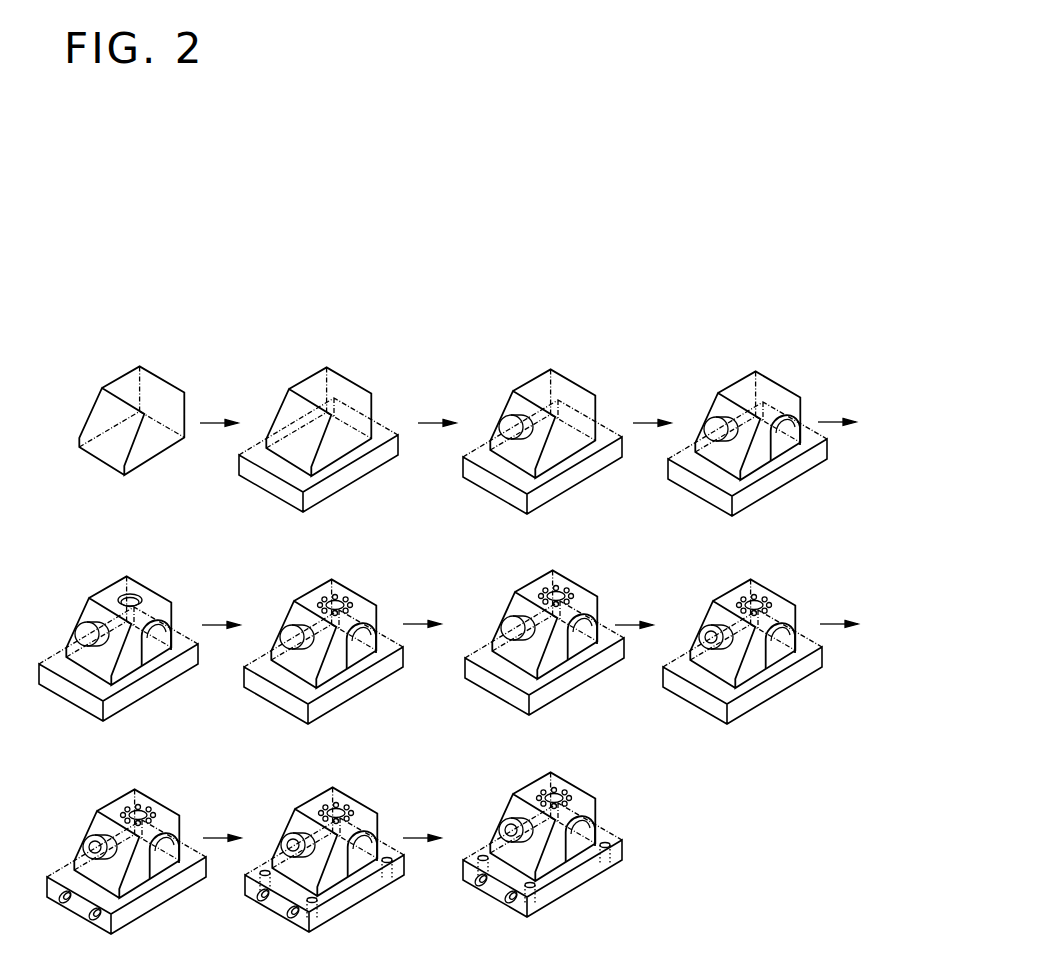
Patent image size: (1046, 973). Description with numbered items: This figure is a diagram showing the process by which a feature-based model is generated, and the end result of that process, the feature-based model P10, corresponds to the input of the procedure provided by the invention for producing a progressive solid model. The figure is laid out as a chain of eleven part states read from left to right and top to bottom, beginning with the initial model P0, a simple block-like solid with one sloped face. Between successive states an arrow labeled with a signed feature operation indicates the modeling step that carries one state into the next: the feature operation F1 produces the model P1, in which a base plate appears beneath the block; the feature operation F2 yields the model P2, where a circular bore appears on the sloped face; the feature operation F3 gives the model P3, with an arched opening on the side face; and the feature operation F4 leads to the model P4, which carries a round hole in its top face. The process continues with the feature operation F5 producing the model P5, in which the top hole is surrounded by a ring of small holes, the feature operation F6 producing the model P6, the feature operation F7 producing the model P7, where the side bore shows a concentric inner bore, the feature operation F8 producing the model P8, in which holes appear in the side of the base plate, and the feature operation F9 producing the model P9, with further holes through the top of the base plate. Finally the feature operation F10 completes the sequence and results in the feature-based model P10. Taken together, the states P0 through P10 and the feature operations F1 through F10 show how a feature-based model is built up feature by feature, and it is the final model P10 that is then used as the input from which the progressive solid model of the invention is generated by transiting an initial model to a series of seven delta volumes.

The initial workpiece (raw stock part) P0 is at (131, 399).
The part after adding base plate feature P1 is at (318, 418).
The part after adding side bore P2 is at (542, 420).
The part after adding arch slot P3 is at (747, 422).
The part after removing top hole P4 is at (118, 627).
The part after removing bolt hole pattern P5 is at (323, 630).
The intermediate part state P6 is at (544, 621).
The part after removing inner bore P7 is at (742, 630).
The part after removing base side holes P8 is at (126, 840).
The part after removing base top holes P9 is at (324, 838).
The feature-based model P10 is at (542, 826).
The additive feature operation 1 F1 is at (219, 407).
The additive feature operation 2 F2 is at (437, 407).
The additive feature operation 3 F3 is at (652, 407).
The feature operation 4 F4 is at (841, 406).
The subtractive feature operation 5 F5 is at (221, 609).
The subtractive feature operation 6 F6 is at (426, 608).
The subtractive feature operation 7 F7 is at (638, 609).
The feature operation 8 F8 is at (843, 608).
The subtractive feature operation 9 F9 is at (222, 822).
The subtractive feature operation 10 F10 is at (432, 822).